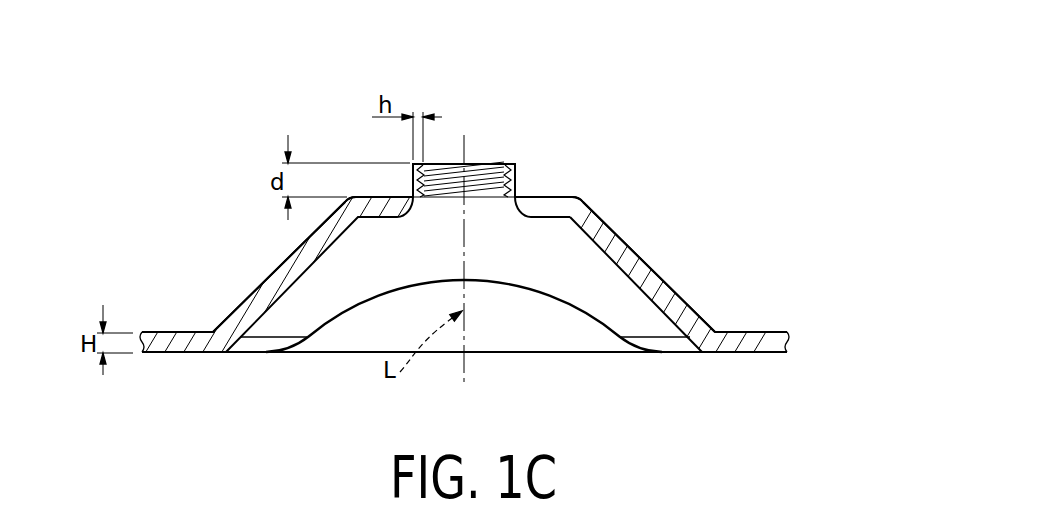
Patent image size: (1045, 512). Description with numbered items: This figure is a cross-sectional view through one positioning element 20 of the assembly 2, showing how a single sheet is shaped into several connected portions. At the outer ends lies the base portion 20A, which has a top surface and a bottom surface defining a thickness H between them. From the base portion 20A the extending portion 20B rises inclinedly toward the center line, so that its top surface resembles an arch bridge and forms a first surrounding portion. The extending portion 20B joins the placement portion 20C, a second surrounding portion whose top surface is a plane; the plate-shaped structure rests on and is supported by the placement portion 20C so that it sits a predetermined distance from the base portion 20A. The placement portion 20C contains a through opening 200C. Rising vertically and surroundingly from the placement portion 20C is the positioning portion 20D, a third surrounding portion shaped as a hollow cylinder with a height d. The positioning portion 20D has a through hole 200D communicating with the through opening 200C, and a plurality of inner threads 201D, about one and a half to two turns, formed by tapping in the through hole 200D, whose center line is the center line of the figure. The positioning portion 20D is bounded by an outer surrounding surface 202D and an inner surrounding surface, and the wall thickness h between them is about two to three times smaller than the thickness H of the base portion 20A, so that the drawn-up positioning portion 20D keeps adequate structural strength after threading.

The supporting member 2 is at (230, 245).
The positioning element 20 is at (795, 74).
The base portion 20A is at (763, 340).
The extending portion 20B is at (645, 280).
The placement portion 20C is at (553, 203).
The positioning portion 20D is at (517, 183).
The through hole 200D is at (489, 173).
The inner threads 201D is at (445, 165).
The outer surrounding surface 202D is at (412, 168).
The through opening 200C is at (490, 205).